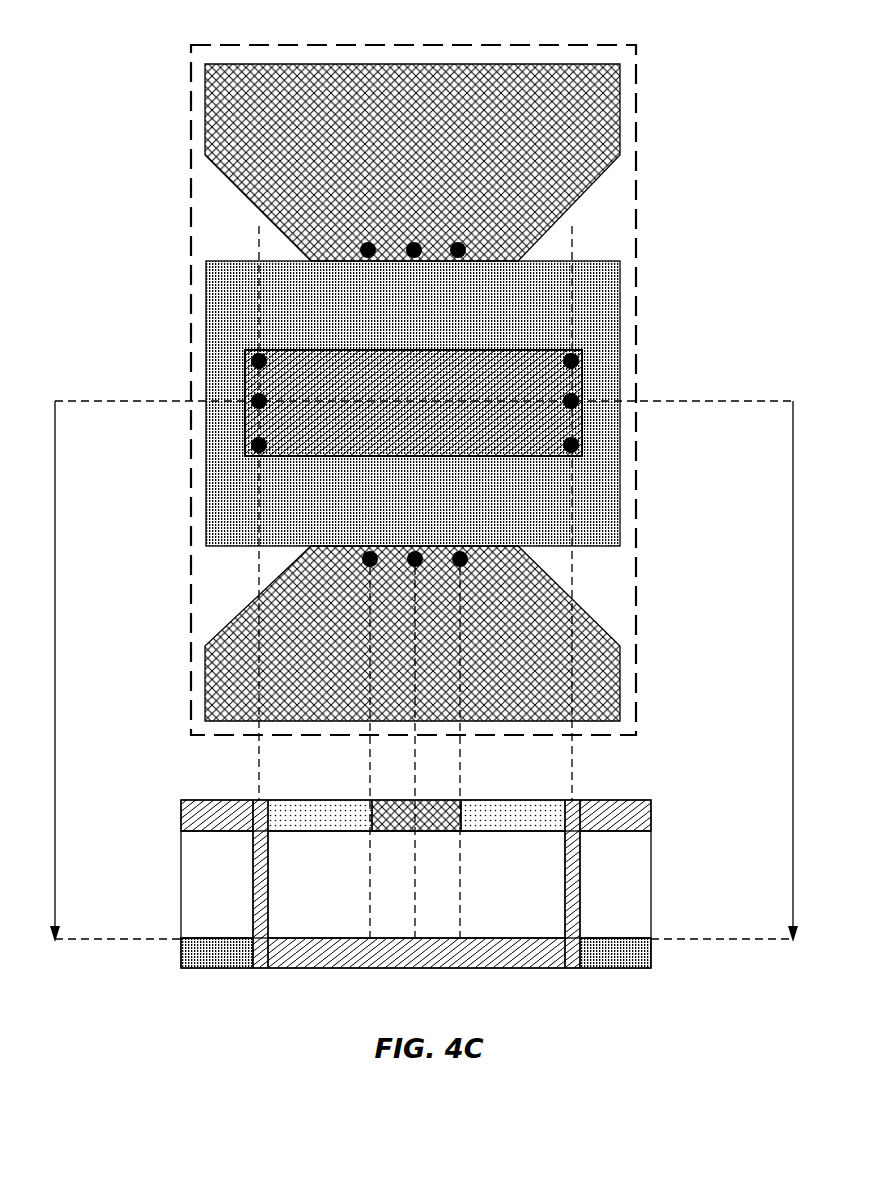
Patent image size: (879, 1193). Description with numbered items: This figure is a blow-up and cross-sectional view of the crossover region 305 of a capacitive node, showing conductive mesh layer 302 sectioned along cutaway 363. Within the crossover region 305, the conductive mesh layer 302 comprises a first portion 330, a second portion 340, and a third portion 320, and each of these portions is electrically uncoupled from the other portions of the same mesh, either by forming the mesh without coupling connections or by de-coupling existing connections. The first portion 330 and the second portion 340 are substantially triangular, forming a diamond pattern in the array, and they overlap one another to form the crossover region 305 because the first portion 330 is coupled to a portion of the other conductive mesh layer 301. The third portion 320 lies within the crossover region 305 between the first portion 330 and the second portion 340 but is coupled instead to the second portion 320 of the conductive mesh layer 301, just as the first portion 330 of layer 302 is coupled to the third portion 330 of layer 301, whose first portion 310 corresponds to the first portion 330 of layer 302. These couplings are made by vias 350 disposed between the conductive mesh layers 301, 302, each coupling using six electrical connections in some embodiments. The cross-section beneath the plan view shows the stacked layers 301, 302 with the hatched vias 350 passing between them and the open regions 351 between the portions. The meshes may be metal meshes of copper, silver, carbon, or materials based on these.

The conductive mesh layer 301 is at (163, 788).
The conductive mesh layer 302 is at (170, 970).
The crossover region 305 is at (633, 562).
The first portion 310 is at (416, 815).
The second portion / third portion 320 is at (318, 355).
The third portion / first portion 330 is at (397, 68).
The second portion 340 is at (227, 283).
The vias 350 is at (238, 436).
The cavity 351 is at (416, 884).
The cutaway 363 is at (748, 387).